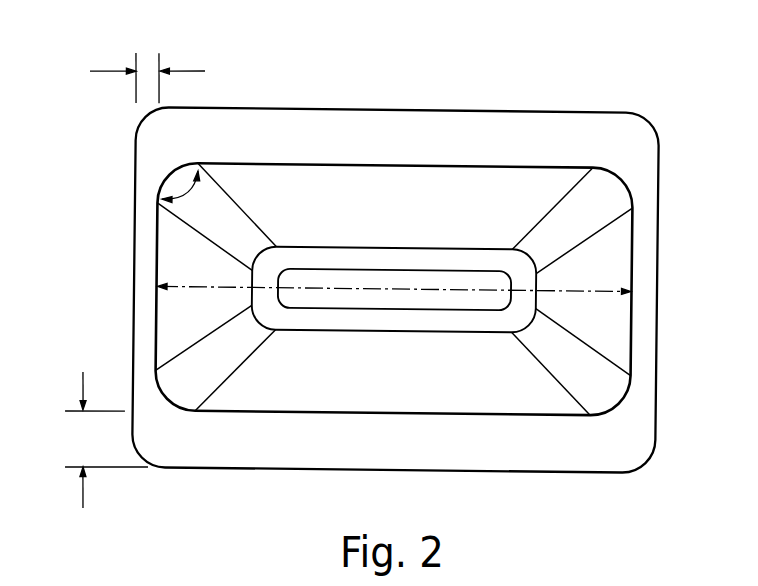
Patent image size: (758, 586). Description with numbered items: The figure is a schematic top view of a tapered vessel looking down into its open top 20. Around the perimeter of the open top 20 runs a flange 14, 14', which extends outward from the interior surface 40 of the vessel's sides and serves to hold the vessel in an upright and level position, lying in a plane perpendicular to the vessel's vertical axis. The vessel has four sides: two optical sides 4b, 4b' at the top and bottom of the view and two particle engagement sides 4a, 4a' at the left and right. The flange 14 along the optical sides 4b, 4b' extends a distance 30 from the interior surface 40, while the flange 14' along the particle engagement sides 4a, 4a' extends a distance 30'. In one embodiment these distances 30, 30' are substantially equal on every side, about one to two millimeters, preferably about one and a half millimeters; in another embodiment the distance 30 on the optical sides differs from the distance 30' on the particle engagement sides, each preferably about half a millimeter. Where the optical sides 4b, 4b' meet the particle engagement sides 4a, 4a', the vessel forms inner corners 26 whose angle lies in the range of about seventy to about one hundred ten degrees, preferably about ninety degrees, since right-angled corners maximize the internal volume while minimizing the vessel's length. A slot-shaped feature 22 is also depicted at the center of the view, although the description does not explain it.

The open top 20 is at (536, 108).
The flange 14 is at (394, 290).
The flange 14' is at (395, 300).
The particle engagement side 4a is at (162, 286).
The particle engagement side 4a' is at (630, 292).
The optical side 4b is at (393, 389).
The optical side 4b' is at (395, 188).
The slot 22 is at (405, 288).
The inner corner 26 is at (189, 195).
The distance 30 is at (82, 439).
The distance 30' is at (143, 64).
The interior surface 40 is at (493, 187).